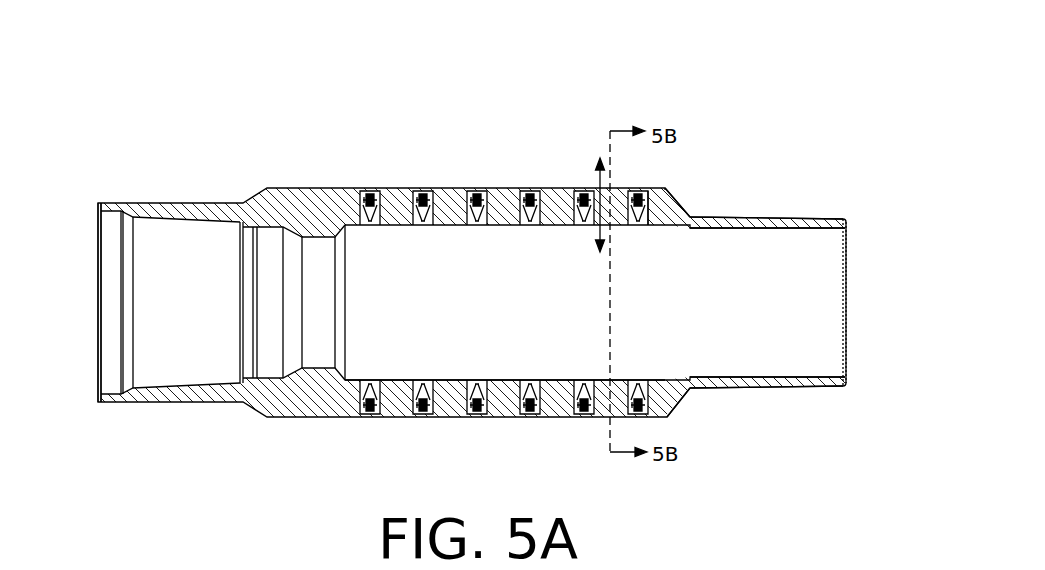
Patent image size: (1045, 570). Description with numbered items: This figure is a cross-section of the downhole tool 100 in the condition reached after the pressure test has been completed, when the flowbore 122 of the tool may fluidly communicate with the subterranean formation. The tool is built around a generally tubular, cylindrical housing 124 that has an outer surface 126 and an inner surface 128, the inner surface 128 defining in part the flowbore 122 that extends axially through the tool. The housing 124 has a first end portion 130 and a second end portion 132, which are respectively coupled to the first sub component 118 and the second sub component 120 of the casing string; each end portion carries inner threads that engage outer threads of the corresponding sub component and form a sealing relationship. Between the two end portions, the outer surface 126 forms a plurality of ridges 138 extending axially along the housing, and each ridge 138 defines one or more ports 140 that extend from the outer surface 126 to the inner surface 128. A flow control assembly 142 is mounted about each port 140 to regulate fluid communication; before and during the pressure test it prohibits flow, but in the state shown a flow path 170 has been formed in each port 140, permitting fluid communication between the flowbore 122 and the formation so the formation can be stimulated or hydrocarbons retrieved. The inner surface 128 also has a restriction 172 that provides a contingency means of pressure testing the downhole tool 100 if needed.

The downhole tool 100 is at (150, 66).
The first sub component 118 is at (98, 348).
The second sub component 120 is at (847, 270).
The flowbore 122 is at (775, 351).
The housing 124 is at (307, 187).
The outer surface 126 is at (320, 417).
The inner surface 128 is at (563, 380).
The first end portion 130 is at (144, 178).
The second end portion 132 is at (785, 193).
The ridge 138 is at (680, 200).
The port 140 is at (592, 227).
The flow control assembly 142 is at (657, 168).
The flow path 170 is at (607, 232).
The restriction 172 is at (324, 232).